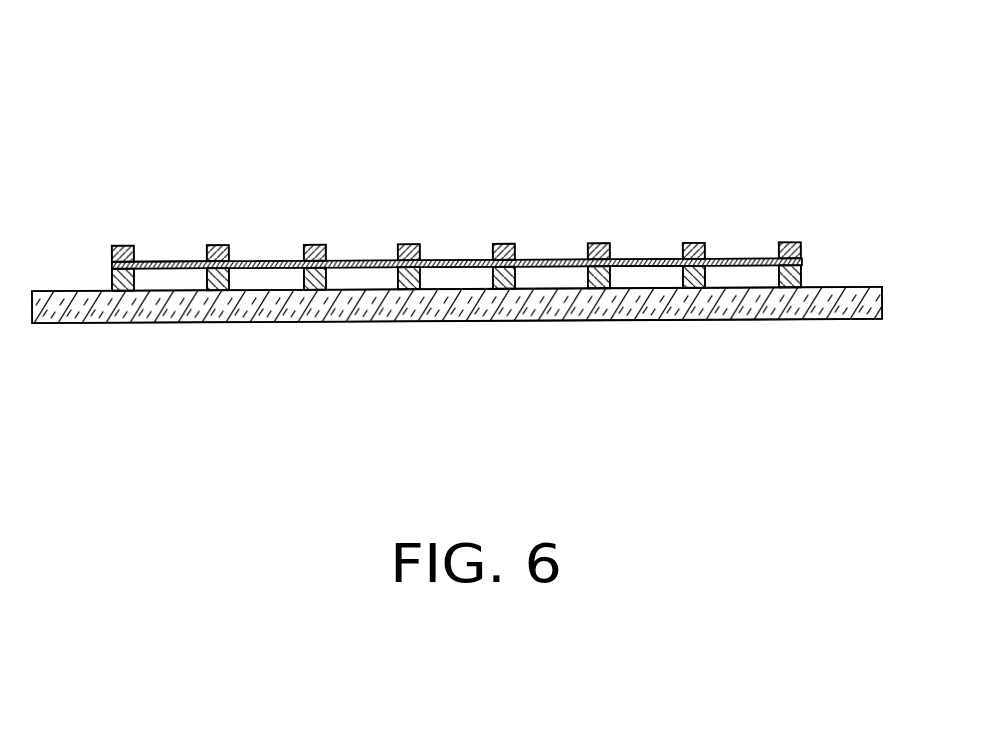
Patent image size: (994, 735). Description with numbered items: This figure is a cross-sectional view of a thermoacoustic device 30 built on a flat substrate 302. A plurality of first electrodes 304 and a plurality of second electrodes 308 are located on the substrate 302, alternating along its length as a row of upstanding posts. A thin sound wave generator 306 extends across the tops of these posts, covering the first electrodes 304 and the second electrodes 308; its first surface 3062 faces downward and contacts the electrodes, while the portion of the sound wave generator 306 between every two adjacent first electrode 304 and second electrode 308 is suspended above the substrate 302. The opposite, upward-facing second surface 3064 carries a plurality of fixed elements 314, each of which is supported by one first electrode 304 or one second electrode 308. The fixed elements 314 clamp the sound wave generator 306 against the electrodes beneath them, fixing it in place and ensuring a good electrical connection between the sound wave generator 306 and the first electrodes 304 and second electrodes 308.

The thermoacoustic device 30 is at (560, 68).
The substrate 302 is at (865, 307).
The first electrodes 304 is at (125, 288).
The sound wave generator 306 is at (463, 259).
The second electrodes 308 is at (220, 279).
The fixed elements 314 is at (120, 247).
The first surface 3062 is at (642, 278).
The second surface 3064 is at (271, 252).